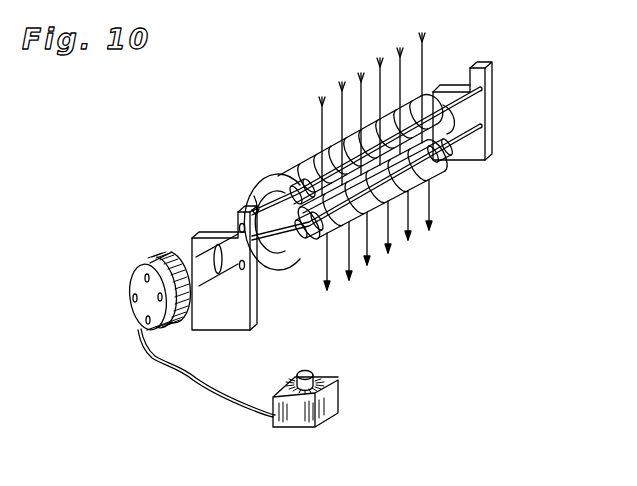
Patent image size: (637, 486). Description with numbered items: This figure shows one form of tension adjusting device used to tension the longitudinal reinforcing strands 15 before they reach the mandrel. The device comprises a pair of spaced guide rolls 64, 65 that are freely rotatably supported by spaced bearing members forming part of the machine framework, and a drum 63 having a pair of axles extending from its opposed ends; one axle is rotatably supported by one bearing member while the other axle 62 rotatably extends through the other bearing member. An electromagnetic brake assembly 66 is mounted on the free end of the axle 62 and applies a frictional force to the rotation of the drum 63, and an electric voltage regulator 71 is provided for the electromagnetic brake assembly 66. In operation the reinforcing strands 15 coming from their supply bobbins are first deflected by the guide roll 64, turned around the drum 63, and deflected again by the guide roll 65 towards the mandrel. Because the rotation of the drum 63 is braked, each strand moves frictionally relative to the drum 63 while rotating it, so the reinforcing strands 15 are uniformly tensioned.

The longitudinal reinforcing strands 15 is at (424, 64).
The axle 62 is at (205, 262).
The drum 63 is at (244, 208).
The guide roll 64 is at (292, 166).
The guide roll 65 is at (433, 163).
The electromagnetic brake assembly 66 is at (137, 284).
The electric voltage regulator 71 is at (338, 381).